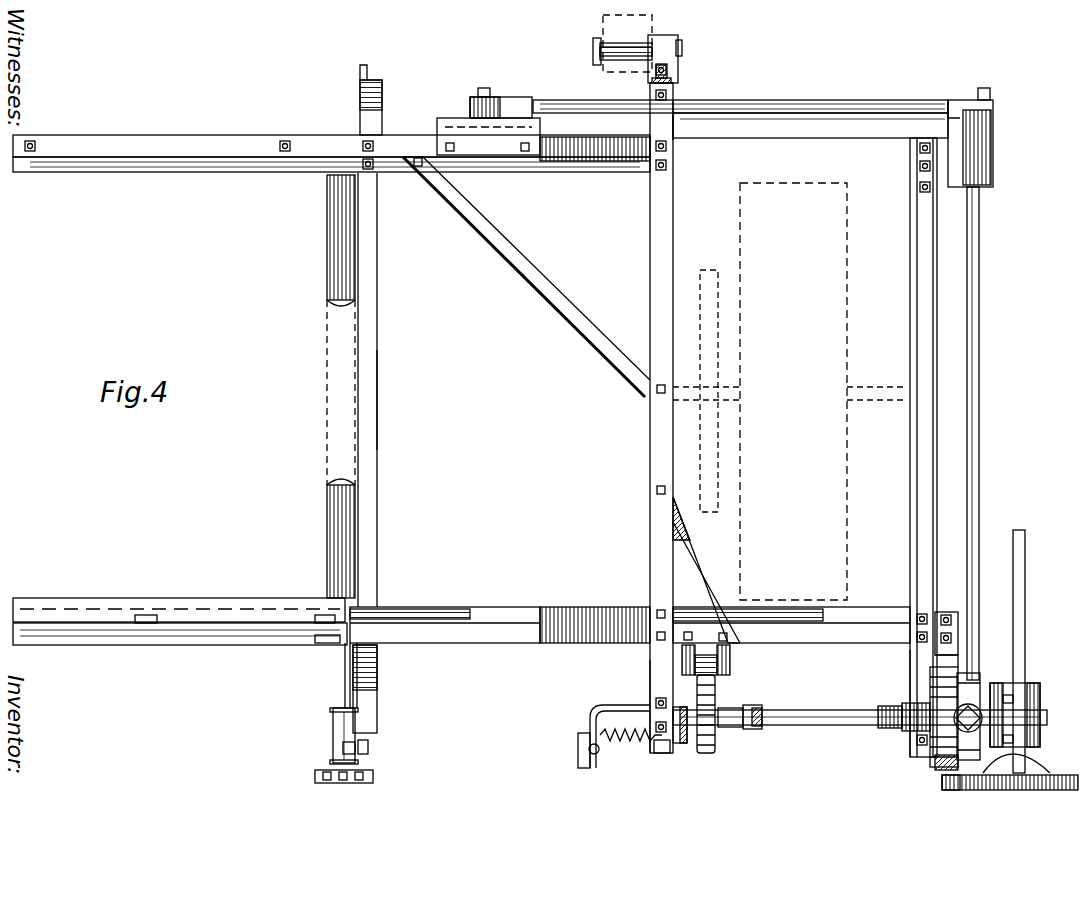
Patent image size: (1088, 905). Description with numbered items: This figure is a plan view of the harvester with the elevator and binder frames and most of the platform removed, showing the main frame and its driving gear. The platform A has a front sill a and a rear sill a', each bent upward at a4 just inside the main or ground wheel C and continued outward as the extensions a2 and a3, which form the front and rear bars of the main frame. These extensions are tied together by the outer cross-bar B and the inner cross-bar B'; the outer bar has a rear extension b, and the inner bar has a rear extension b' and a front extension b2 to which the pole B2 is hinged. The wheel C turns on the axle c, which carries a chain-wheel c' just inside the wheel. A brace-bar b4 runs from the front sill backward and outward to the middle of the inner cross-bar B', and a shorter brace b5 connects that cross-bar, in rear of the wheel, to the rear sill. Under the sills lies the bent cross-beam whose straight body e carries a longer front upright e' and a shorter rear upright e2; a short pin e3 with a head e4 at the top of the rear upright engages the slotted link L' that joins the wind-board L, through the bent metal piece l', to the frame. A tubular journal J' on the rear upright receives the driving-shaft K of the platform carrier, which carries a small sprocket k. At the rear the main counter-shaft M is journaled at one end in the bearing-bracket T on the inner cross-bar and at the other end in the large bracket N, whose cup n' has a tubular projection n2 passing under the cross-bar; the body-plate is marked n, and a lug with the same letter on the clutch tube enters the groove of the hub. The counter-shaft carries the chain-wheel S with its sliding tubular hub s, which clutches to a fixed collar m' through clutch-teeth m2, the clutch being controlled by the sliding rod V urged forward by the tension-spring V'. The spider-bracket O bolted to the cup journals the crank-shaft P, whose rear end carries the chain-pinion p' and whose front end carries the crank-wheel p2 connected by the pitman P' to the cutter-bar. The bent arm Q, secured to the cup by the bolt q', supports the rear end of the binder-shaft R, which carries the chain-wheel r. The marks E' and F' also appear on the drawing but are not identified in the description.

The platform A is at (215, 165).
The wind-board L is at (180, 654).
The front sill a is at (412, 190).
The upward bends a4 is at (618, 160).
The front sill extension a2 is at (735, 150).
The rear sill extension a3 is at (790, 608).
The rear sill a' is at (445, 606).
The inner cross-bar B' is at (635, 394).
The rear extension of inner cross-bar b' is at (620, 706).
The front extension of inner cross-bar b2 is at (666, 120).
The pole B2 is at (603, 18).
The fastening block F' is at (687, 423).
The brace-bar b4 is at (527, 272).
The rear brace-bar b5 is at (700, 565).
The outer cross-bar B is at (906, 447).
The rear extension of outer cross-bar b is at (885, 703).
The pitman P' is at (740, 86).
The crank arm or wheel p2 is at (960, 100).
The crank-shaft P is at (984, 433).
The binder-shaft R is at (1013, 530).
The chain-wheel r is at (1020, 790).
The sprocket or chain pinion p' is at (942, 796).
The main counter-shaft M is at (795, 710).
The tubular hub s is at (733, 708).
The collar m' is at (763, 699).
The clutch-teeth m2 is at (752, 718).
The chain-wheel S is at (714, 750).
The body-plate n is at (679, 710).
The tubular projection n2 is at (878, 716).
The bent arm Q is at (915, 720).
The cup n' is at (915, 772).
The large bracket N is at (946, 612).
The spider-bracket O is at (975, 690).
The bolt q' is at (1018, 698).
The main or ground wheel C is at (847, 335).
The chain-wheel c' is at (706, 387).
The axle c is at (876, 374).
The vertical column E' is at (367, 390).
The body portion of U-beam e is at (391, 400).
The front upright e' is at (341, 95).
The rear upright e2 is at (377, 725).
The short pin e3 is at (368, 748).
The head e4 is at (343, 750).
The tubular journal J' is at (319, 736).
The small driving-wheel k is at (325, 783).
The driving-shaft K is at (340, 663).
The link L' is at (311, 679).
The S-shaped piece l' is at (294, 654).
The bearing-bracket T is at (600, 715).
The rod V is at (572, 758).
The tension-spring V' is at (631, 758).